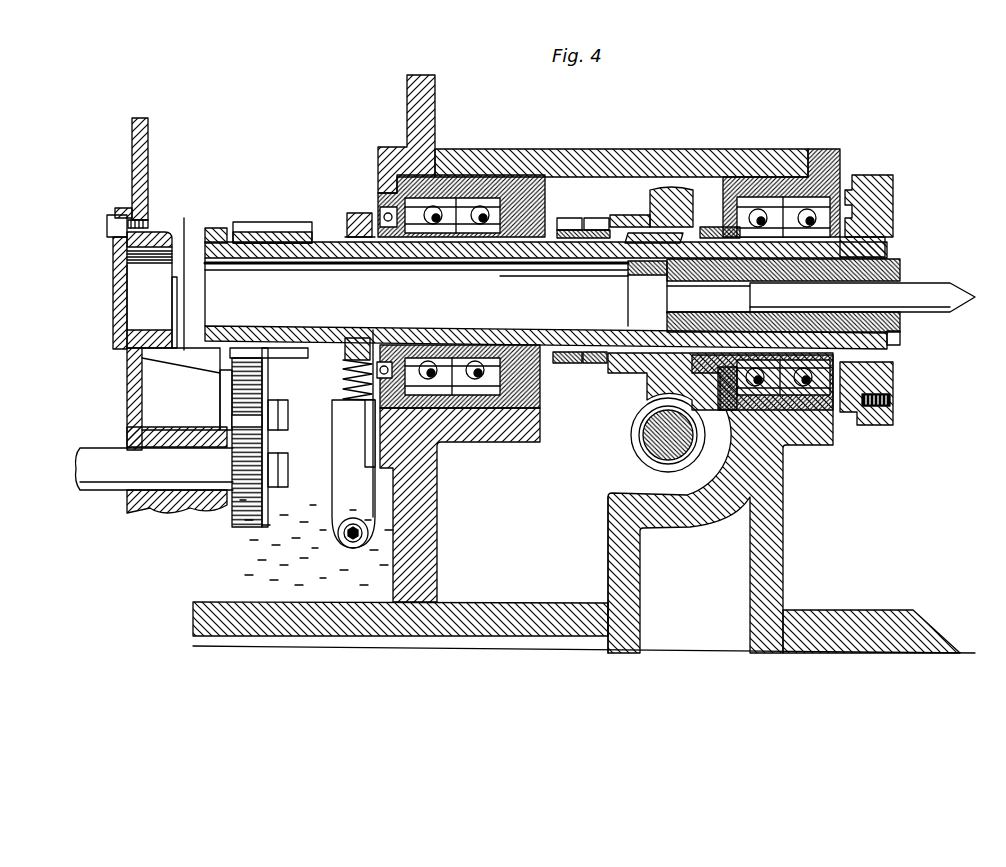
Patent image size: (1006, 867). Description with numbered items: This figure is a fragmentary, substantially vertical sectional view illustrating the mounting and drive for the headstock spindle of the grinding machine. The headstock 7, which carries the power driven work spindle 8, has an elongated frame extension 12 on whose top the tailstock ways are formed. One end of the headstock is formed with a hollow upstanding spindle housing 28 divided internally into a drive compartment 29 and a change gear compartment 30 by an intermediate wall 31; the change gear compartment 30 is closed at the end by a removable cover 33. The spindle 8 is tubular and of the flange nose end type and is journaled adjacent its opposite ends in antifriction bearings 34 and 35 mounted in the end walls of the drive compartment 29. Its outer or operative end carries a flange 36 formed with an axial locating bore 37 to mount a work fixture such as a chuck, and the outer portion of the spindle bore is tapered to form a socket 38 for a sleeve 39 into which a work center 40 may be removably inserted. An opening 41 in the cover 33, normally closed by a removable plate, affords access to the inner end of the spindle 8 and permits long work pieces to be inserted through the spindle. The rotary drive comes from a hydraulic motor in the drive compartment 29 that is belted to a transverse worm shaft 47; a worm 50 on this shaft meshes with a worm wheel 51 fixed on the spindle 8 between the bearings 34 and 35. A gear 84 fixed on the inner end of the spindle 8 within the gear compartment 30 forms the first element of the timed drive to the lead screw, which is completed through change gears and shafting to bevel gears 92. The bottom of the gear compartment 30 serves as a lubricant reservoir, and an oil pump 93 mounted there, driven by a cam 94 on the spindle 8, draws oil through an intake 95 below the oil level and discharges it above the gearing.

The headstock 7 is at (744, 143).
The work spindle 8 is at (328, 242).
The frame extension 12 is at (862, 622).
The spindle housing 28 is at (785, 528).
The drive compartment 29 is at (612, 575).
The change gear compartment 30 is at (383, 113).
The intermediate wall 31 is at (420, 545).
The removable cover 33 is at (132, 167).
The antifriction bearing 34 is at (470, 362).
The antifriction bearing 35 is at (718, 380).
The flange 36 is at (891, 192).
The locating bore 37 is at (893, 246).
The socket 38 is at (900, 339).
The sleeve 39 is at (902, 264).
The work center 40 is at (955, 293).
The opening 41 is at (175, 255).
The worm shaft 47 is at (655, 440).
The worm 50 is at (637, 428).
The worm wheel 51 is at (650, 210).
The gear 84 is at (258, 228).
The bevel gears 92 is at (118, 300).
The oil pump 93 is at (343, 437).
The cam 94 is at (357, 213).
The intake 95 is at (345, 546).